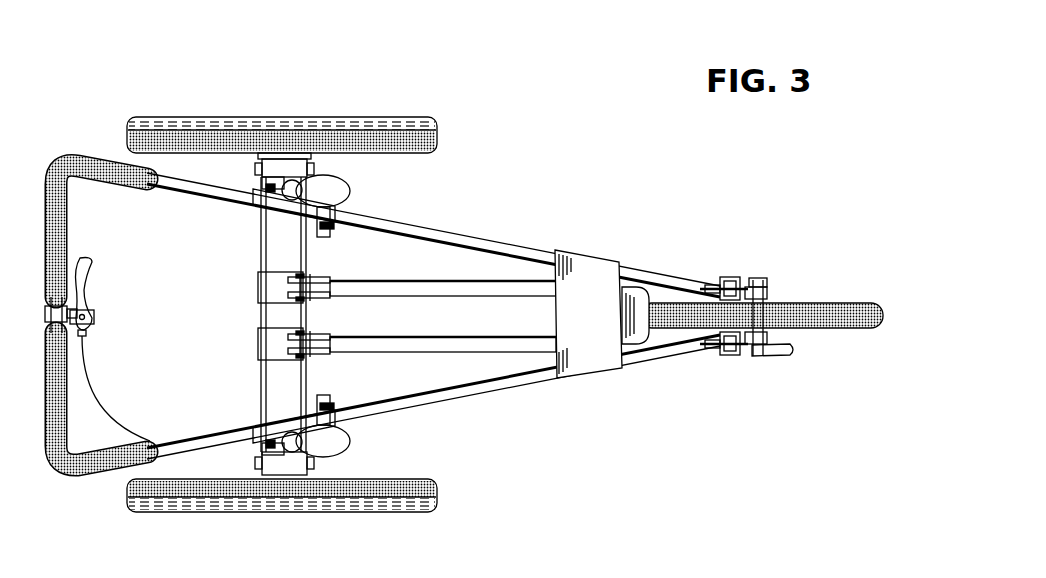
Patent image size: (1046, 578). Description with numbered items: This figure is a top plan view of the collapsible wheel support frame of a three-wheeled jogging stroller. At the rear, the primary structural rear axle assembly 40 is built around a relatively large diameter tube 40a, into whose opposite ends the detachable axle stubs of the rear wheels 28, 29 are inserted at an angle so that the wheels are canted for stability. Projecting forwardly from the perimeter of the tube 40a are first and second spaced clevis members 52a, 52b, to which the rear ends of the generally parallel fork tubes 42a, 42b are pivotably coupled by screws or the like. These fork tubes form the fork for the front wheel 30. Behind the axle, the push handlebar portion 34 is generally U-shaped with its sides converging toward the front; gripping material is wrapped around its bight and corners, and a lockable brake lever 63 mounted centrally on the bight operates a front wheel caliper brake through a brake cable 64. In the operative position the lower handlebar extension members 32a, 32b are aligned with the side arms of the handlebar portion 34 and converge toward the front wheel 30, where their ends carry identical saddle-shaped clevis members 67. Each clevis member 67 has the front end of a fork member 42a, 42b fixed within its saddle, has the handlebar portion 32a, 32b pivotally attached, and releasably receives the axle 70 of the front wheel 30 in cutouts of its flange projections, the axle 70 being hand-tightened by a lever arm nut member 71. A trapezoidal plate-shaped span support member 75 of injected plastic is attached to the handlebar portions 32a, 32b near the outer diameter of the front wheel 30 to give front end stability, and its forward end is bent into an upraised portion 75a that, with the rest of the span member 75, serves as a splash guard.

The rear wheel 28 is at (298, 507).
The rear wheel 29 is at (246, 116).
The front wheel 30 is at (858, 330).
The lower handlebar extension member 32a is at (468, 390).
The lower handlebar extension member 32b is at (440, 233).
The push handlebar portion 34 is at (50, 148).
The rear axle assembly 40 is at (281, 314).
The tube 40a is at (303, 368).
The fork tube 42a is at (426, 337).
The fork tube 42b is at (527, 297).
The clevis member 52a is at (257, 340).
The clevis member 52b is at (257, 284).
The lockable brake lever 63 is at (88, 275).
The brake cable 64 is at (93, 402).
The clevis member 67 is at (715, 272).
The axle 70 is at (787, 358).
The lever arm nut member 71 is at (767, 297).
The span support member 75 is at (604, 333).
The upraised portion 75a is at (640, 270).